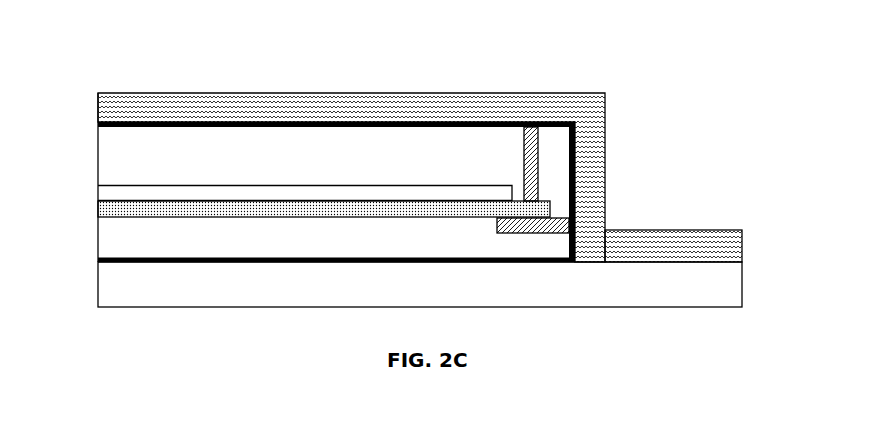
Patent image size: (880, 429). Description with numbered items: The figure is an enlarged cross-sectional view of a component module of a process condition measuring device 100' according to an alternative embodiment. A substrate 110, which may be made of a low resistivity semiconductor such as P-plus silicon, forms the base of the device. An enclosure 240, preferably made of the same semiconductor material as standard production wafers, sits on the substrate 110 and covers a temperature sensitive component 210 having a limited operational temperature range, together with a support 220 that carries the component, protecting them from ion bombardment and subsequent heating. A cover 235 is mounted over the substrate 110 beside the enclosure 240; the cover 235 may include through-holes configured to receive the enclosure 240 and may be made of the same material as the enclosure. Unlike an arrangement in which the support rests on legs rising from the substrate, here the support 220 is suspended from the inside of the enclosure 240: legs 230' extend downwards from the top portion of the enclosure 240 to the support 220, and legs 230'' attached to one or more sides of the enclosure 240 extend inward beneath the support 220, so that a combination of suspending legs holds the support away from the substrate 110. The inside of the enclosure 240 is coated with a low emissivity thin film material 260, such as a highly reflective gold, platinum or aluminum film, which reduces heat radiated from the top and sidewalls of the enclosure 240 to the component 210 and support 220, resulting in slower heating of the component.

The device 100' is at (385, 194).
The substrate 110 is at (98, 287).
The temperature sensitive component 210 is at (98, 186).
The support 220 is at (98, 216).
The legs 230' is at (492, 164).
The legs 230'' is at (494, 236).
The cover 235 is at (669, 237).
The enclosure 240 is at (553, 93).
The low emissivity thin film material 260 is at (403, 122).